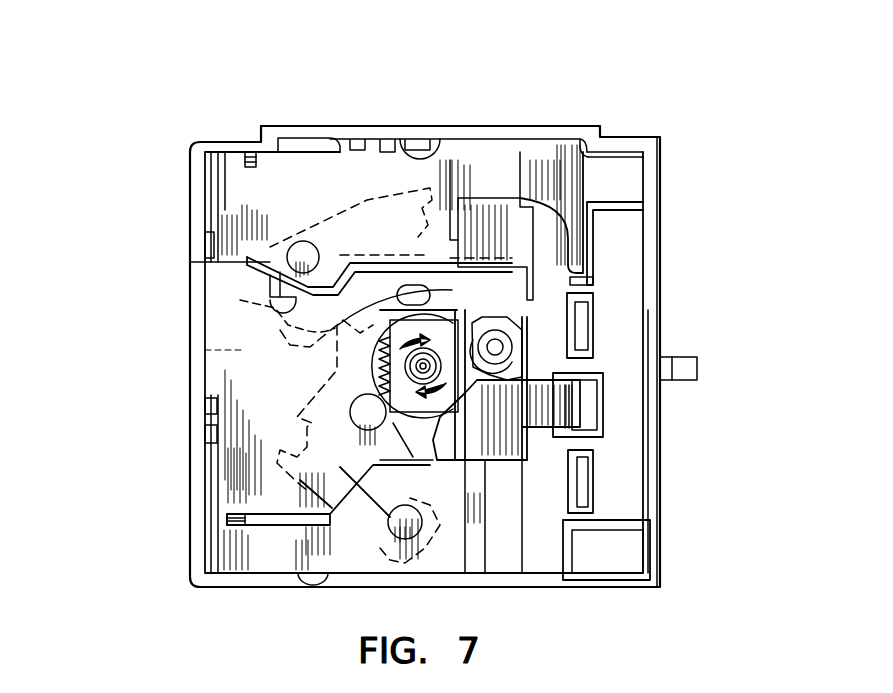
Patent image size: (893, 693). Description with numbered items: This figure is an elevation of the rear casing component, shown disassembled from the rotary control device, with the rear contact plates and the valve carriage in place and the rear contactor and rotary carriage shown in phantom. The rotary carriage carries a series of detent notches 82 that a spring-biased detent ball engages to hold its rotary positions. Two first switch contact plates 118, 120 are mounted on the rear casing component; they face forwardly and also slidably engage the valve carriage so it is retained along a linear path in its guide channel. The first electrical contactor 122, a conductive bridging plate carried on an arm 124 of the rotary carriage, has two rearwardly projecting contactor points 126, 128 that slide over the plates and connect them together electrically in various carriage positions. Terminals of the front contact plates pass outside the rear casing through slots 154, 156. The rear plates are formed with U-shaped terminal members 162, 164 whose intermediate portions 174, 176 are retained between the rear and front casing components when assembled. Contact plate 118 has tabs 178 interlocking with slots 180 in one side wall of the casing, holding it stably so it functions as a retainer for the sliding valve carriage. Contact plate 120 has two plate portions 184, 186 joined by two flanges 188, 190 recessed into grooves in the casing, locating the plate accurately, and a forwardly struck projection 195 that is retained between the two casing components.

The detent notches 82 is at (200, 330).
The first switch contact plate 118 is at (237, 358).
The first switch contact plate 120 is at (347, 172).
The first electrical contactor 122 is at (240, 305).
The arm 124 is at (375, 545).
The contactor point 126 is at (355, 410).
The contactor point 128 is at (407, 527).
The slot 154 is at (583, 327).
The slot 156 is at (580, 480).
The U-shaped terminal member 162 is at (585, 403).
The U-shaped terminal member 164 is at (583, 235).
The intermediate portion 174 is at (583, 420).
The intermediate portion 176 is at (573, 203).
The tabs 178 is at (190, 272).
The slots 180 is at (190, 275).
The plate portion 184 is at (265, 190).
The plate portion 186 is at (255, 550).
The flange 188 is at (227, 519).
The flange 190 is at (478, 325).
The forwardly struck projection 195 is at (253, 150).